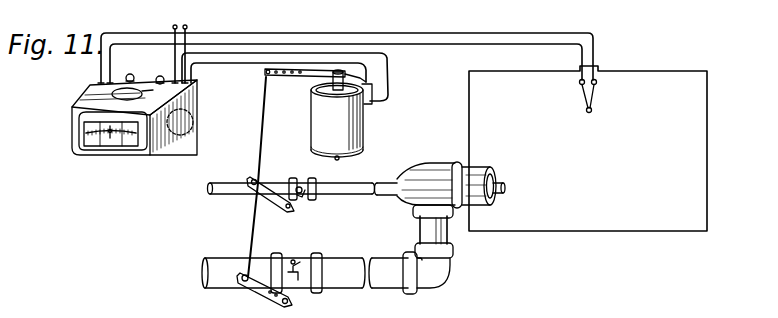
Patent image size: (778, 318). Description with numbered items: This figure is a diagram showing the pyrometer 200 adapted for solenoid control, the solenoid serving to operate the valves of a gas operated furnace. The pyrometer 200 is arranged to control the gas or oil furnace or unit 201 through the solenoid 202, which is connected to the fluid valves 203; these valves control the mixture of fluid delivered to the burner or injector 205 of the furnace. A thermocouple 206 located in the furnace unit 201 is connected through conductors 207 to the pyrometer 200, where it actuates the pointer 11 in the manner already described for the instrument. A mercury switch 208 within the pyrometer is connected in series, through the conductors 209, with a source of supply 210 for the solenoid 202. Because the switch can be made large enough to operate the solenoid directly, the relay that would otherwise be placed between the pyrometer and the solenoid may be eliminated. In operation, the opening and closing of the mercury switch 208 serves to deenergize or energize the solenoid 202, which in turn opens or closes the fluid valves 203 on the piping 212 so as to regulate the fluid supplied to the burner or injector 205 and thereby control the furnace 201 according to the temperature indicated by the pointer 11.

The pointer 11 is at (110, 134).
The pyrometer 200 is at (166, 160).
The gas or oil furnace or unit 201 is at (660, 77).
The solenoid 202 is at (356, 133).
The fluid valves 203 is at (295, 259).
The burner or injector 205 is at (503, 184).
The thermocouple 206 is at (592, 95).
The conductors 207 is at (515, 43).
The mercury switch 208 is at (194, 132).
The conductors 209 is at (236, 55).
The source of supply 210 is at (185, 25).
The pipe line 212 is at (327, 261).